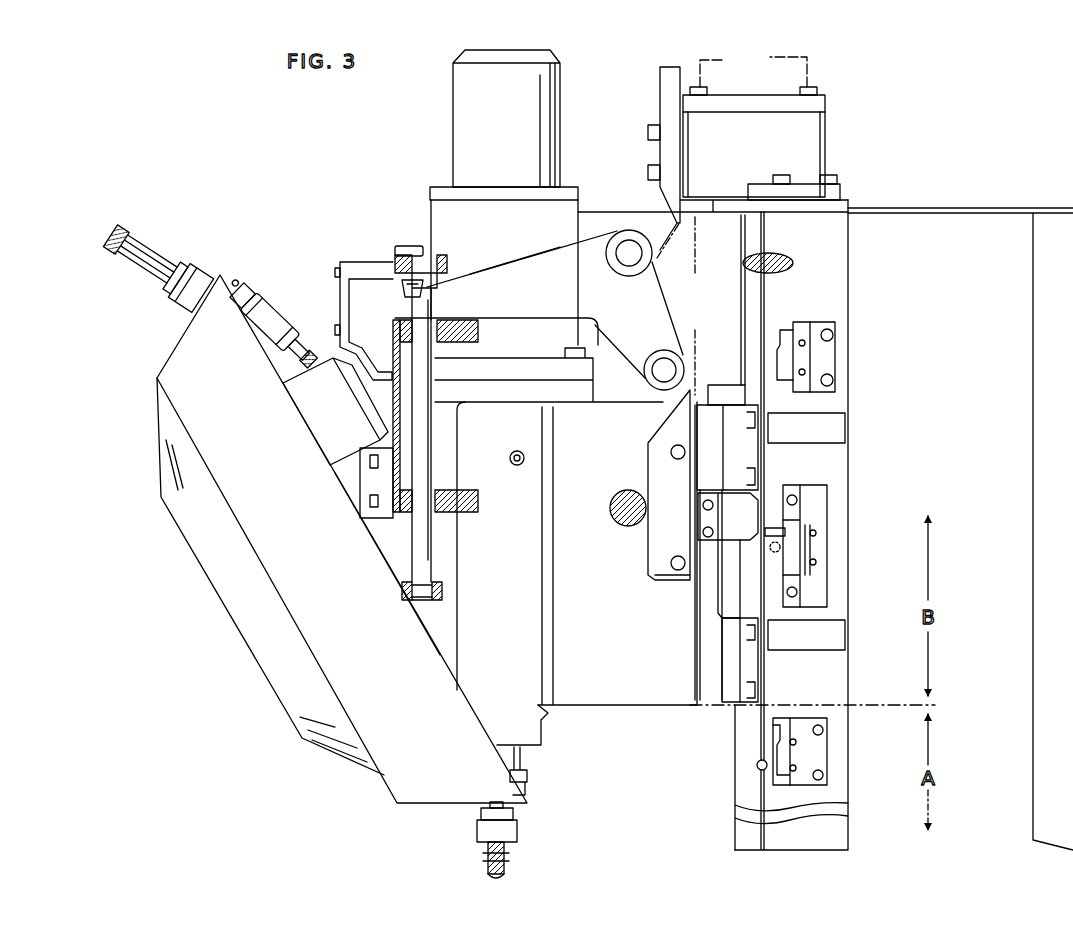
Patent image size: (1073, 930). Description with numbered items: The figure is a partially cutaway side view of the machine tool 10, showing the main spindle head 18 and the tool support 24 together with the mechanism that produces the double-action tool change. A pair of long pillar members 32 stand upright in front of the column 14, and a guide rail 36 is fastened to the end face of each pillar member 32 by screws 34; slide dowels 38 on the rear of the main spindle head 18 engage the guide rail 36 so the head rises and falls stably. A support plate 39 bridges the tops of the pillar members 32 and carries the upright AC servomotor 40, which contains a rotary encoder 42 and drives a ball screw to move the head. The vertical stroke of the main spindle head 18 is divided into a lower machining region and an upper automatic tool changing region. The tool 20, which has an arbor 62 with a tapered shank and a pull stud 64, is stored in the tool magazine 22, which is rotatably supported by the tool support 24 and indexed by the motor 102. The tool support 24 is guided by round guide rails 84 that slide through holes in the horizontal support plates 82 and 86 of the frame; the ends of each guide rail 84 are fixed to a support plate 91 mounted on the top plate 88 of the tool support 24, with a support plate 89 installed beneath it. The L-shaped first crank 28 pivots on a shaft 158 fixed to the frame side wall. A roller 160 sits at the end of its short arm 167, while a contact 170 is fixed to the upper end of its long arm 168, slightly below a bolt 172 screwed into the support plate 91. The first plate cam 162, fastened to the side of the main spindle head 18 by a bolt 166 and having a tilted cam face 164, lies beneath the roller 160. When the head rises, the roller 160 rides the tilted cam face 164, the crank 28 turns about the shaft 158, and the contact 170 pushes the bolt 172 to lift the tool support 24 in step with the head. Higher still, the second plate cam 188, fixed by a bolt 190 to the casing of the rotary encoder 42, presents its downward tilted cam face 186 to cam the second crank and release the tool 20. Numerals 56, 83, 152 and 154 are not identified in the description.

The machine tool 10 is at (358, 243).
The column 14 is at (946, 218).
The main spindle head 18 is at (548, 735).
The tool 20 is at (190, 268).
The tool magazine 22 is at (175, 393).
The tool support 24 is at (347, 483).
The first crank 28 is at (553, 250).
The long pillar member 32 is at (840, 256).
The screw 34 is at (790, 268).
The guide rail 36 is at (748, 757).
The slide dowel 38 is at (755, 447).
The support plate 39 is at (840, 192).
The AC servomotor 40 is at (822, 85).
The rotary encoder 42 is at (826, 118).
The motor 56 is at (558, 62).
The arbor 62 is at (260, 313).
The pull stud 64 is at (303, 347).
The support plate 82 is at (480, 333).
The pin 83 is at (142, 250).
The round guide rail 84 is at (422, 560).
The horizontal support plate 86 is at (478, 500).
The top plate 88 is at (347, 257).
The support plate 89 is at (442, 590).
The support plate 91 is at (386, 253).
The motor 102 is at (315, 420).
The bolt 152 is at (371, 500).
The bolt 154 is at (372, 463).
The shaft 158 is at (622, 258).
The roller 160 is at (655, 412).
The first plate cam 162 is at (700, 258).
The tilted cam face 164 is at (660, 422).
The bolt 166 is at (676, 575).
The short arm 167 is at (672, 303).
The long arm 168 is at (512, 262).
The contact 170 is at (428, 293).
The bolt 172 is at (405, 245).
The tilted cam face 186 is at (660, 204).
The second plate cam 188 is at (660, 78).
The bolt 190 is at (652, 123).